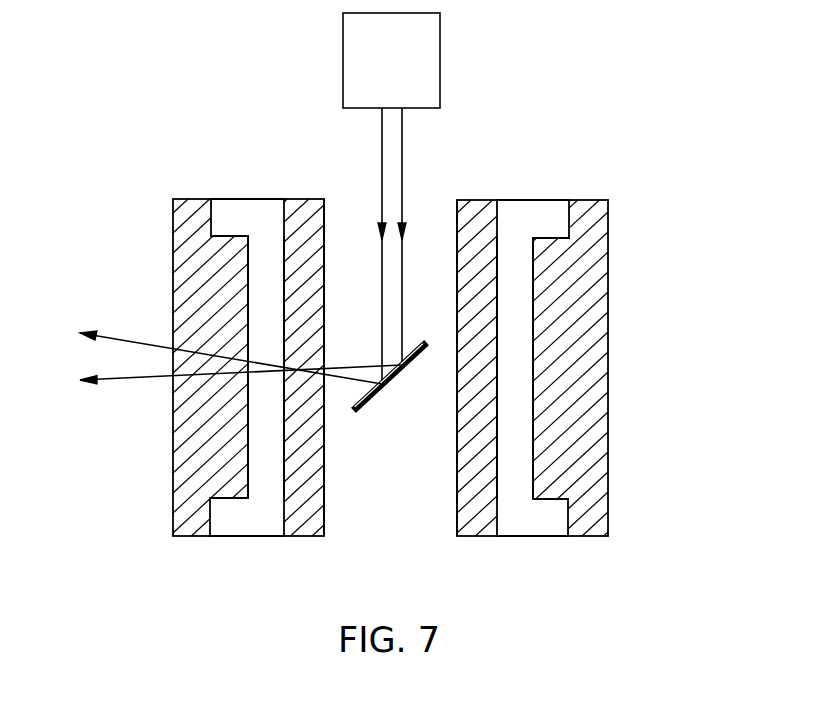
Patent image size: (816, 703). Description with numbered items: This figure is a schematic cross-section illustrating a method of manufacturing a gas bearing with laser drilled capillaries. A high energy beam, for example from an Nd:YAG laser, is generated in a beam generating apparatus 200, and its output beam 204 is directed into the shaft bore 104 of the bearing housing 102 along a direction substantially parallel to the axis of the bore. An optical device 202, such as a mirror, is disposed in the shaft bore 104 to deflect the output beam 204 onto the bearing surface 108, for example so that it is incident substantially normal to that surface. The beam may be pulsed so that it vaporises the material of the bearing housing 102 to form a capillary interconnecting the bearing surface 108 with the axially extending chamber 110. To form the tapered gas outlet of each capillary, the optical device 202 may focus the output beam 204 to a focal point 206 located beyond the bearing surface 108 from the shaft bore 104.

The beam generating apparatus 200 is at (366, 77).
The output beam 204 is at (403, 172).
The optical device 202 is at (392, 388).
The focal point 206 is at (305, 370).
The bearing surface 108 is at (326, 237).
The bearing housing 102 is at (585, 272).
The axially extending chamber 110 is at (269, 455).
The shaft bore 104 is at (425, 520).